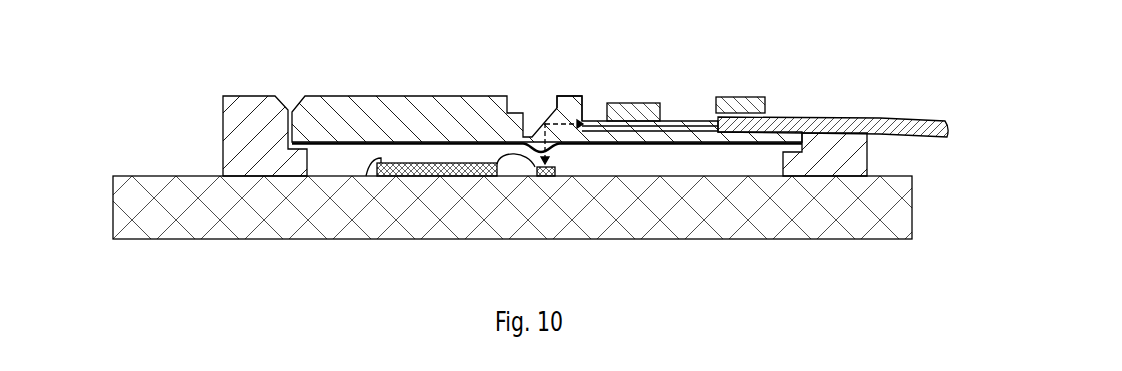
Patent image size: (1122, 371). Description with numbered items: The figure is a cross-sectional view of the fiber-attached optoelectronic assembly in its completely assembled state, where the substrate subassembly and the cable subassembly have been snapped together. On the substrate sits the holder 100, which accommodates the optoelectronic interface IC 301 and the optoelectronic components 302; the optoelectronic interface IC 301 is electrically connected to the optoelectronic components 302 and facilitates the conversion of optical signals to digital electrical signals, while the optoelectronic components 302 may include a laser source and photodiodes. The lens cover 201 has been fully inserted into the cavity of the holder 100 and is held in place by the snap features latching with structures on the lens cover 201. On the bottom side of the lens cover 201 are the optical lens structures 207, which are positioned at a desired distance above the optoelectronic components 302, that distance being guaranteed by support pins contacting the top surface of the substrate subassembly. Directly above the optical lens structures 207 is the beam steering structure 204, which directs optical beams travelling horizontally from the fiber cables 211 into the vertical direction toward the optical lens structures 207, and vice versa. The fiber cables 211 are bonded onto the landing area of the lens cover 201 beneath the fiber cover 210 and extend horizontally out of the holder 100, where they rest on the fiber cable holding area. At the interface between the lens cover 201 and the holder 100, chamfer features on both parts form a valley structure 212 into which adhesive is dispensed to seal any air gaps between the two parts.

The holder 100 is at (222, 127).
The valley structure 212 is at (292, 93).
The lens cover 201 is at (413, 95).
The beam steering structure 204 is at (537, 110).
The optical lens structures 207 is at (558, 152).
The fiber cover 210 is at (638, 103).
The fiber cables 211 is at (820, 110).
The optoelectronic interface IC 301 is at (433, 177).
The optoelectronic components 302 is at (540, 177).